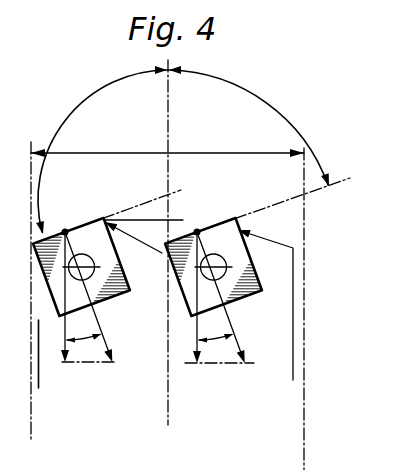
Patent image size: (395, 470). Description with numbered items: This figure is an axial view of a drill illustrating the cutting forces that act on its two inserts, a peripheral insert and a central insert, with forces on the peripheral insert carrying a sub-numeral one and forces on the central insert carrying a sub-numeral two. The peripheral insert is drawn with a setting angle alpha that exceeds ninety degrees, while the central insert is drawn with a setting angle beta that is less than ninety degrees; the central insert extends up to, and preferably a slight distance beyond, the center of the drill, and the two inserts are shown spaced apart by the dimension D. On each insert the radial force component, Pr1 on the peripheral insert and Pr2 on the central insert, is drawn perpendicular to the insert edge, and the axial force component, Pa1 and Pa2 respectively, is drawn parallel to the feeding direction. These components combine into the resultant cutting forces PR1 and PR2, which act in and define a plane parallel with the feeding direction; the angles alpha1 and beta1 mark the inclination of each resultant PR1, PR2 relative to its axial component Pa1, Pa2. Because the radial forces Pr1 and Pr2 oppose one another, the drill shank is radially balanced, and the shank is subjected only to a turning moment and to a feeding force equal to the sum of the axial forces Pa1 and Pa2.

The setting angle of the peripheral insert alpha is at (100, 150).
The setting angle of the central insert beta is at (249, 122).
The distance D between roller centre planes D is at (167, 143).
The radial force on the peripheral insert Pr1 is at (133, 236).
The radial force on the central insert Pr2 is at (265, 299).
The axial force on the peripheral insert Pa1 is at (62, 312).
The resultant cutting force on the peripheral insert PR1 is at (104, 312).
The axial force on the central insert Pa2 is at (191, 313).
The resultant cutting force on the central insert PR2 is at (235, 313).
The angle α1 between axial and resultant force of first roller alpha1 is at (83, 332).
The angle β1 between axial and resultant force of second roller beta1 is at (215, 332).